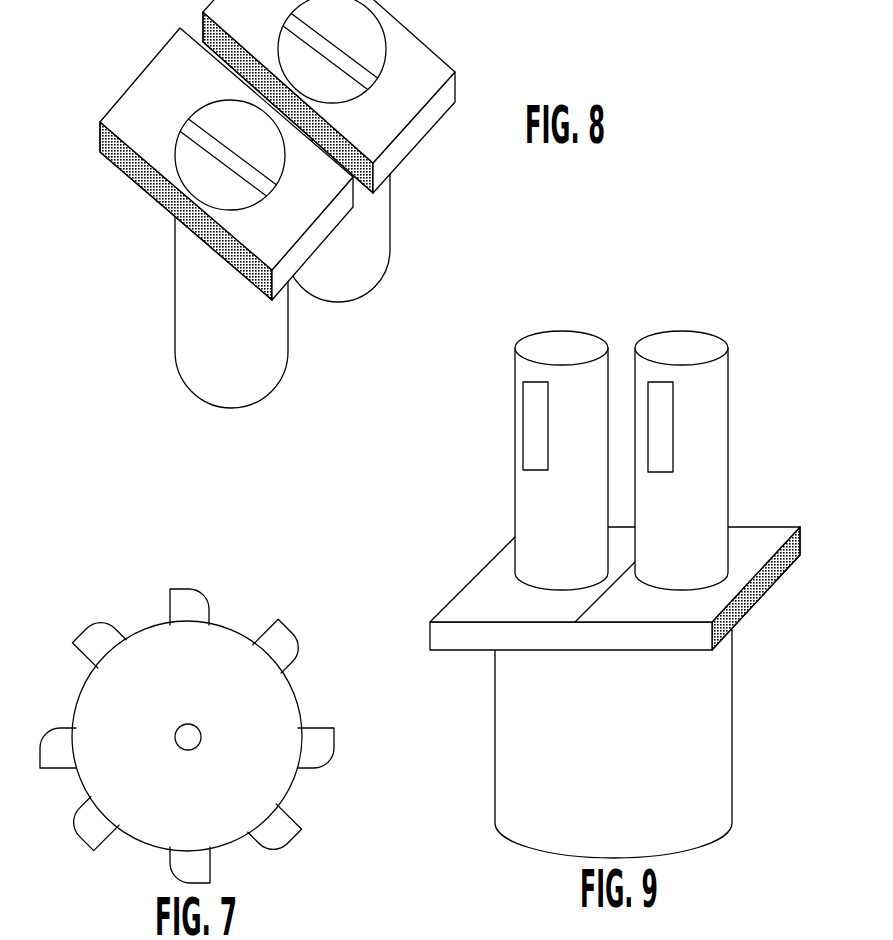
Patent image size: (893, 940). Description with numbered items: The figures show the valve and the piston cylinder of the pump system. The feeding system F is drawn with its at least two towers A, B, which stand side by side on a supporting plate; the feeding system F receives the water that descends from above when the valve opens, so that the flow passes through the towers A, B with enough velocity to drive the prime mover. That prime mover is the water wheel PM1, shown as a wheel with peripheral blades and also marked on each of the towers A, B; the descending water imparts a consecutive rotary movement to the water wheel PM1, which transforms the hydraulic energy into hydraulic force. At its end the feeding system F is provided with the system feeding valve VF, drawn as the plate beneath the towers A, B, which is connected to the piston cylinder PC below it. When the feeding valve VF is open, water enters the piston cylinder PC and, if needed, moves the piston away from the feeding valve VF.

In FIG. 9, the feeding system F is at (580, 460).
In FIG. 9, the water wheel PM1 is at (522, 395).
In FIG. 7, the water wheel PM1 is at (240, 615).
In FIG. 9, the system feeding valve VF is at (463, 576).
In FIG. 9, the piston cylinder PC is at (486, 726).
In FIG. 9, the tower A is at (523, 460).
In FIG. 9, the tower B is at (681, 460).